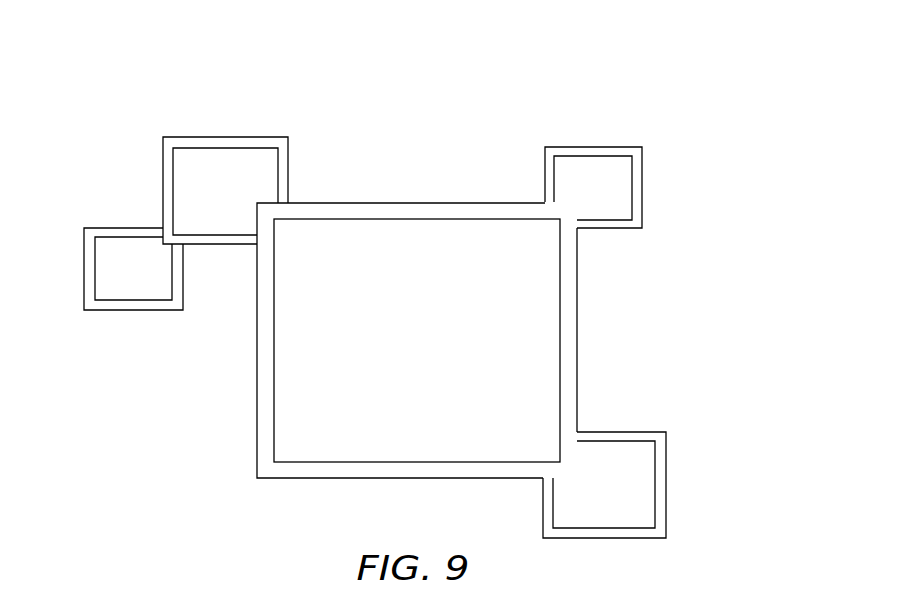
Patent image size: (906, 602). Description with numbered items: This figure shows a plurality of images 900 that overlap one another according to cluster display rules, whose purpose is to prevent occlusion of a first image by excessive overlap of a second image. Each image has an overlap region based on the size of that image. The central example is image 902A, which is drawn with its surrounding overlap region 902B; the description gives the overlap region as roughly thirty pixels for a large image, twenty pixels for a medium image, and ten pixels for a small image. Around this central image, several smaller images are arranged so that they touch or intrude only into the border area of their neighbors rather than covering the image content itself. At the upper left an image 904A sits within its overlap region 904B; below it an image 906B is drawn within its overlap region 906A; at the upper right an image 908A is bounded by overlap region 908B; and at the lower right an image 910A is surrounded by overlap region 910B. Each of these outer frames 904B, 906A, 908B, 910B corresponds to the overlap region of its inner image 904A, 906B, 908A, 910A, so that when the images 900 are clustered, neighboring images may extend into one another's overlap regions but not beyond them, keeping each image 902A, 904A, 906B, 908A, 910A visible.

The plurality of images 900 is at (462, 123).
The image 902A is at (410, 218).
The overlap region 902B is at (577, 320).
The secondary image 904A is at (178, 178).
The secondary image frame 904B is at (222, 137).
The secondary image frame 906A is at (88, 310).
The secondary image 906B is at (130, 297).
The secondary image 908A is at (594, 148).
The secondary image frame 908B is at (647, 172).
The secondary image 910A is at (655, 462).
The secondary image frame 910B is at (667, 507).